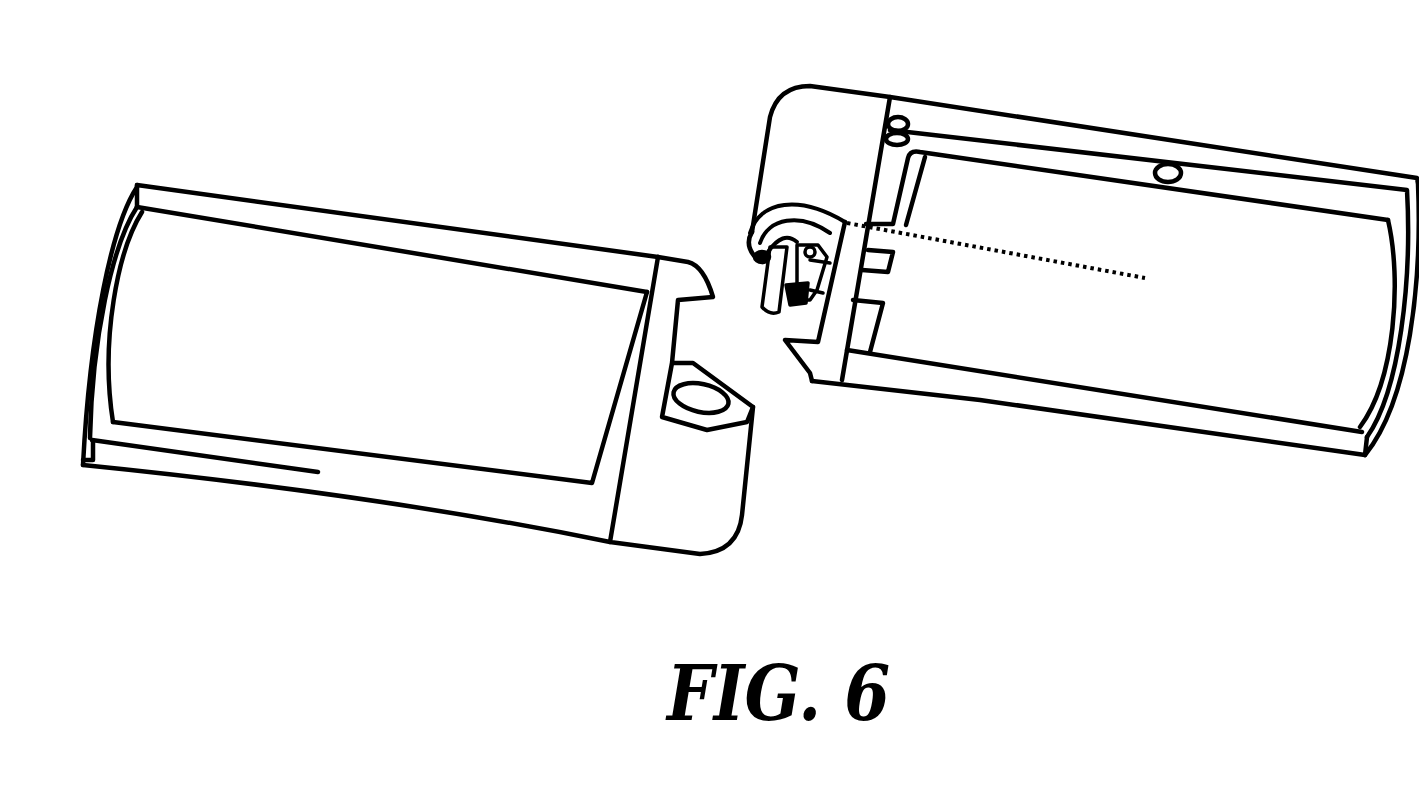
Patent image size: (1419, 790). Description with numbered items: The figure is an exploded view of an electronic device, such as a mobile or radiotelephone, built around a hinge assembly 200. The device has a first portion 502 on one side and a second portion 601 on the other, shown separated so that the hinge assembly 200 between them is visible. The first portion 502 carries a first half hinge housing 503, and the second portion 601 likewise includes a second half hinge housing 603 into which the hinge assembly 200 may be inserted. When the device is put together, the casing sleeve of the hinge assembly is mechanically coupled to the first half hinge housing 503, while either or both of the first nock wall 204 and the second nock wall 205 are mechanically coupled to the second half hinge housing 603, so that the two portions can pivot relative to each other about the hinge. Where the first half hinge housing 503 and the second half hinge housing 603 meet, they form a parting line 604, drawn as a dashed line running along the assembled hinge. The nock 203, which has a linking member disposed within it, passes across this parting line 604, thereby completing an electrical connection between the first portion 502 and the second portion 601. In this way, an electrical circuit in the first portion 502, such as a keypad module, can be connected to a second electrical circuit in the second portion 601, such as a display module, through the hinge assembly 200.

The second portion 601 is at (507, 497).
The second half hinge housing 603 is at (712, 465).
The first half hinge housing 503 is at (803, 152).
The first portion 502 is at (1063, 144).
The parting line 604 is at (992, 254).
The hinge assembly 200 is at (791, 322).
The nock 203 is at (750, 266).
The first nock wall 204 is at (767, 322).
The second nock wall 205 is at (760, 287).